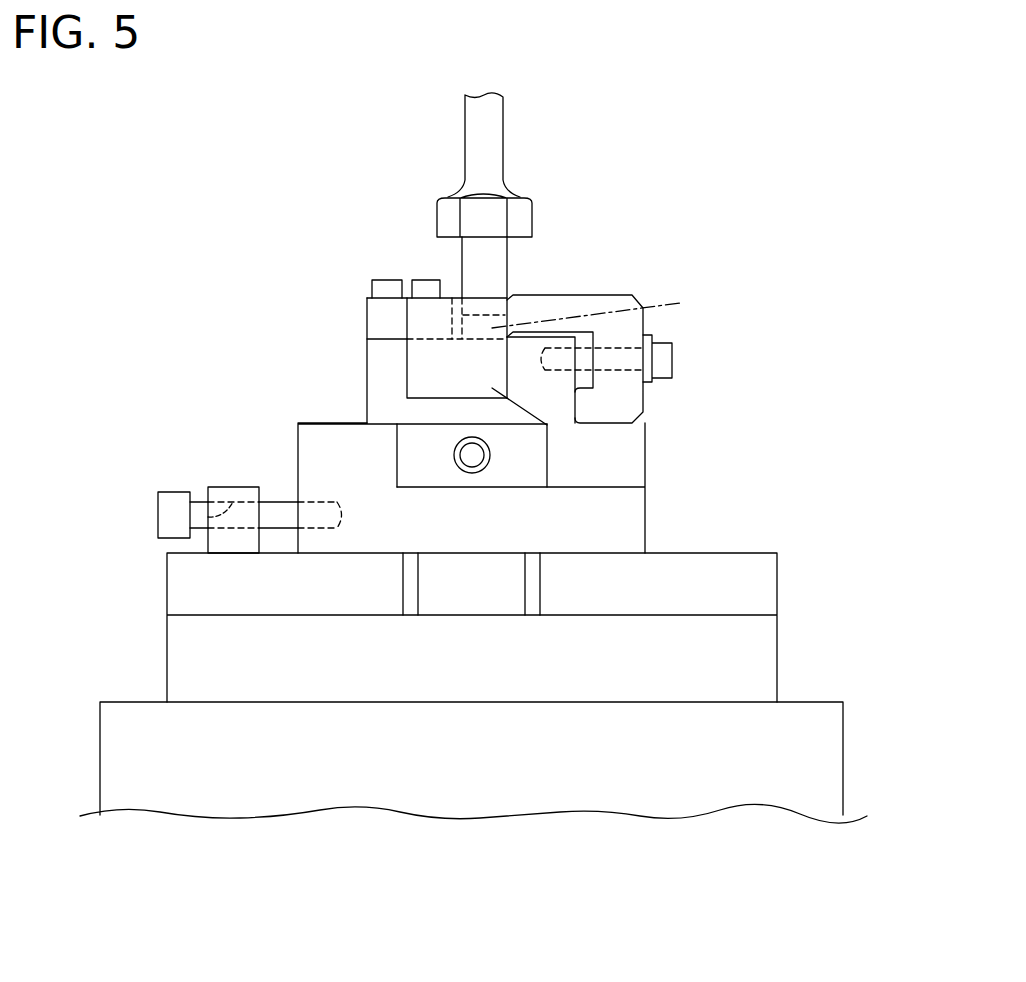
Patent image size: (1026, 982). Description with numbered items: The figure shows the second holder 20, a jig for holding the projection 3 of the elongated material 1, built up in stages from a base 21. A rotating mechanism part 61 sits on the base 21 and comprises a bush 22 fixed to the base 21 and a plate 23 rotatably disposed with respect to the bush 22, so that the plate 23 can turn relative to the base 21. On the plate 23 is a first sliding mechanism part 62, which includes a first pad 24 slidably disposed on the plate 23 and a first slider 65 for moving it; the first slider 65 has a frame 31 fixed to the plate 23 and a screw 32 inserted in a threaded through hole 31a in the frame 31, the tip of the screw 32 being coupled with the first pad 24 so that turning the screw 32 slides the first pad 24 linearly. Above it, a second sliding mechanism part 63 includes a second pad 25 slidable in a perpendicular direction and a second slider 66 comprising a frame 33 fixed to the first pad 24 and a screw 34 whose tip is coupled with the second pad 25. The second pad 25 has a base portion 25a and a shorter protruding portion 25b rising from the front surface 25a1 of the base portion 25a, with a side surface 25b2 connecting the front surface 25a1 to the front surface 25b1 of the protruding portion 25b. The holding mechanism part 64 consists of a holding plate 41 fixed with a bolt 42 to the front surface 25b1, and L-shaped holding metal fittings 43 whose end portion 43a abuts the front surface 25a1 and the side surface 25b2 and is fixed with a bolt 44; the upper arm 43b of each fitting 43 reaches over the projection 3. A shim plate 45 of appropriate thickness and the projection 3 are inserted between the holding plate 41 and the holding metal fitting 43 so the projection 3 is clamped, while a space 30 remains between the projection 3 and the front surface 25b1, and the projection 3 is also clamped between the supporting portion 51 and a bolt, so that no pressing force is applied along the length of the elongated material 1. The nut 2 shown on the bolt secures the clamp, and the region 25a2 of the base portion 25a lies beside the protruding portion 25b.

The elongated material 1 is at (505, 140).
The nut 2 is at (533, 212).
The projection 3 is at (508, 253).
The second holder 20 is at (191, 249).
The base 21 is at (777, 655).
The bush 22 is at (413, 582).
The plate 23 is at (777, 580).
The first pad 24 is at (645, 525).
The second pad 25 is at (268, 298).
The base portion 25a is at (332, 423).
The front surface 25a1 is at (607, 423).
The lower clamp portion 25a2 is at (627, 447).
The protruding portion 25b is at (367, 367).
The front surface 25b1 is at (388, 337).
The side surface 25b2 is at (380, 360).
The space 30 is at (645, 310).
The frame 31 is at (235, 489).
The through hole 31a is at (212, 508).
The screw 32 is at (173, 492).
The frame 33 is at (397, 455).
The screw 34 is at (520, 448).
The holding plate 41 is at (367, 325).
The bolt 42 is at (428, 281).
The holding metal fitting 43 is at (635, 298).
The end portion 43a is at (652, 408).
The upper arm 43b is at (525, 285).
The bolt 44 is at (673, 357).
The shim plate 45 is at (453, 295).
The supporting portion 51 is at (547, 425).
The rotating mechanism part 61 is at (840, 625).
The first sliding mechanism part 62 is at (807, 500).
The second sliding mechanism part 63 is at (770, 412).
The holding mechanism part 64 is at (672, 200).
The first slider 65 is at (130, 504).
The second slider 66 is at (572, 468).